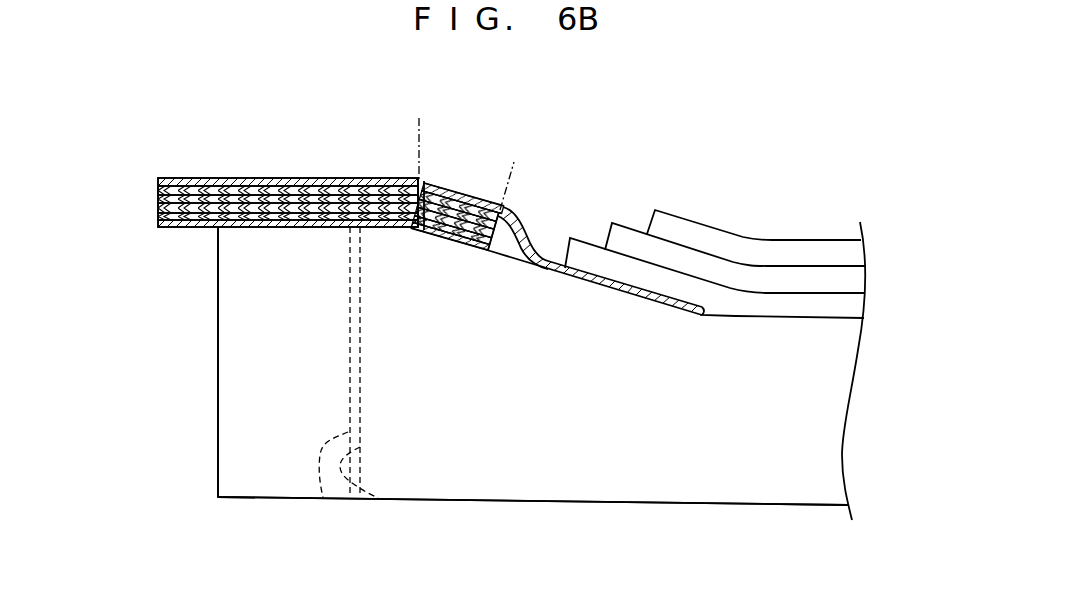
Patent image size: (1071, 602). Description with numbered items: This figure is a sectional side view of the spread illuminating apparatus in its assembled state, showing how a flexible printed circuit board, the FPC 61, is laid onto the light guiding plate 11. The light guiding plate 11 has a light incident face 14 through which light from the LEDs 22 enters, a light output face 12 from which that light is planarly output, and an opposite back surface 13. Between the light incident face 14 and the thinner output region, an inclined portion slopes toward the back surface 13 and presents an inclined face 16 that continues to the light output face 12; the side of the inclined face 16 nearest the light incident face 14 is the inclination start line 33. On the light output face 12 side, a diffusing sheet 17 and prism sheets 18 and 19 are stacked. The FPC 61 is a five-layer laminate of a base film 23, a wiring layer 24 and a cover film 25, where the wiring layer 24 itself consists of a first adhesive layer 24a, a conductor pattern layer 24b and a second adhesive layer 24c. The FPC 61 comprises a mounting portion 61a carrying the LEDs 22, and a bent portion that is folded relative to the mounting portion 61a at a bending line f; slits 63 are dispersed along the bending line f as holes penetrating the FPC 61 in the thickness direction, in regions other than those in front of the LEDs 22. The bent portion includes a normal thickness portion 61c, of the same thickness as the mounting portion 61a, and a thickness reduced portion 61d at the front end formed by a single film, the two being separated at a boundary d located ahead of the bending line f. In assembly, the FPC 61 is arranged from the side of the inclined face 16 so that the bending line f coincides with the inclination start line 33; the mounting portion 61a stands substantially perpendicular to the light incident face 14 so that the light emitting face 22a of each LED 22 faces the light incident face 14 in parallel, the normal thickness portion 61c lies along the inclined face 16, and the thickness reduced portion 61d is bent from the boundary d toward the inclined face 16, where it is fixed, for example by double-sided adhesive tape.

The light guiding plate 11 is at (858, 397).
The light output face 12 is at (830, 318).
The back surface 13 is at (670, 504).
The light incident face 14 is at (378, 498).
The inclined face 16 is at (503, 250).
The diffusing sheet 17 is at (585, 246).
The prism sheet 18 is at (623, 233).
The prism sheet 19 is at (680, 223).
The LED 22 is at (237, 386).
The light emitting face 22a is at (323, 497).
The base film 23 is at (263, 251).
The wiring layer 24 is at (231, 185).
The first adhesive layer 24a is at (255, 224).
The conductor pattern layer 24b is at (255, 201).
The second adhesive layer 24c is at (255, 177).
The cover film 25 is at (263, 155).
The inclination start line 33 is at (418, 233).
The FPC 61 is at (373, 201).
The mounting portion 61a is at (231, 201).
The normal thickness portion 61c is at (468, 197).
The thickness reduced portion 61d is at (533, 243).
The slit 63 is at (423, 183).
The bending line f is at (418, 133).
The boundary d is at (513, 160).